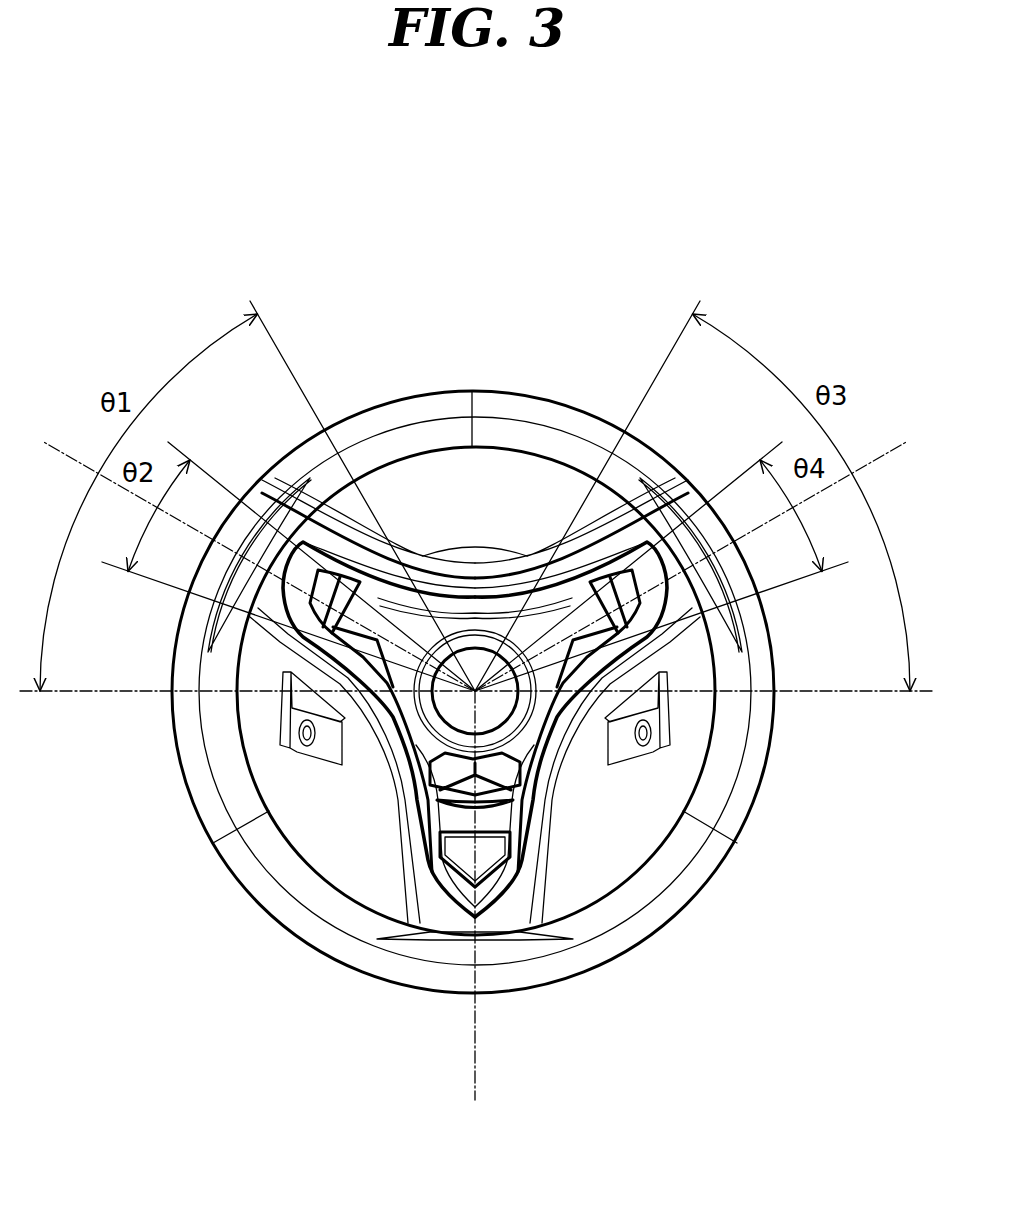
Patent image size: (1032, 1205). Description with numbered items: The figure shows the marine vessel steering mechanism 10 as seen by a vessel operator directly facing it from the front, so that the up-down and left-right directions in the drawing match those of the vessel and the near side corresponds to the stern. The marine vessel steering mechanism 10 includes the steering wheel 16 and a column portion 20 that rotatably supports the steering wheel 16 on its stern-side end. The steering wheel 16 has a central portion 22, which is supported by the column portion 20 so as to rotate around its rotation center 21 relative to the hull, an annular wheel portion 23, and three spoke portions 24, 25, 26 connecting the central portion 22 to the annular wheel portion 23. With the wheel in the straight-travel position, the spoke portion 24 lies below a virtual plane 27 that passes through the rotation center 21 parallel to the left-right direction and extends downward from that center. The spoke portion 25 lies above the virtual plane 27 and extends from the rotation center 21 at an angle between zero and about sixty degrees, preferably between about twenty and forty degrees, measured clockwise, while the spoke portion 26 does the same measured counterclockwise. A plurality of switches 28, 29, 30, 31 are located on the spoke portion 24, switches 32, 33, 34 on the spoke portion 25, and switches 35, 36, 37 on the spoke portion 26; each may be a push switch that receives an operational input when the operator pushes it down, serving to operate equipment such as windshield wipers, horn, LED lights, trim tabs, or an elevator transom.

The marine vessel steering mechanism 10 is at (490, 203).
The steering wheel 16 is at (562, 343).
The column portion 20 is at (472, 545).
The rotation center 21 is at (445, 778).
The central portion 22 is at (520, 748).
The annular wheel portion 23 is at (764, 790).
The spoke portion 24 is at (550, 890).
The spoke portion 25 is at (237, 682).
The spoke portion 26 is at (715, 682).
The virtual plane 27 is at (112, 697).
The switch 28 is at (462, 798).
The switch 29 is at (552, 837).
The switch 30 is at (465, 810).
The switch 31 is at (453, 872).
The switch 32 is at (360, 568).
The switch 33 is at (398, 570).
The switch 34 is at (328, 717).
The switch 35 is at (600, 585).
The switch 36 is at (567, 600).
The switch 37 is at (622, 757).